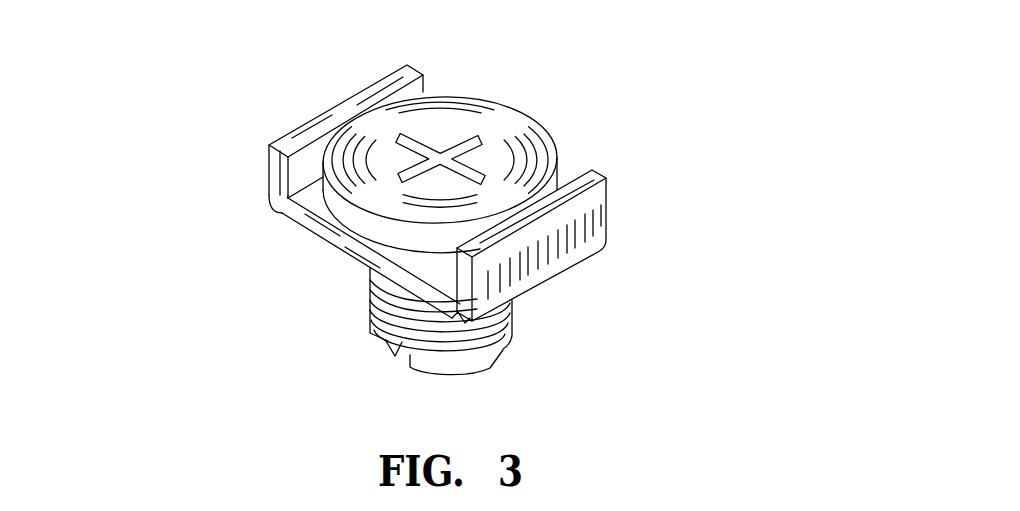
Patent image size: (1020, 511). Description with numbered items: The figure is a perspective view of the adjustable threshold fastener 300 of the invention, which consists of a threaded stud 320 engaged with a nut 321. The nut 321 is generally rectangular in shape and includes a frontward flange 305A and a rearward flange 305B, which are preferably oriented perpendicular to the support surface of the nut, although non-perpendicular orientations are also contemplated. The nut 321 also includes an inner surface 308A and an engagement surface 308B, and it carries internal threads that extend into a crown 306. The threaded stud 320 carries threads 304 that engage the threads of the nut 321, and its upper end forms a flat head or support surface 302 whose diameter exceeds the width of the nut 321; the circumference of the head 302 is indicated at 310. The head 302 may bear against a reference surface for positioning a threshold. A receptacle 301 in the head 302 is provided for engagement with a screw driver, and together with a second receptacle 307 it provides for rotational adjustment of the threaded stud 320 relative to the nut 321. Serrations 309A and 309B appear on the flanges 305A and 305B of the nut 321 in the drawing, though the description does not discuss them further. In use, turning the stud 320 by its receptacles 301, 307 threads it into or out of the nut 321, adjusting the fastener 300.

The adjustable threshold fastener 300 is at (693, 78).
The threaded stud 320 is at (613, 367).
The head or support surface 302 is at (498, 112).
The receptacle 301 is at (406, 130).
The nut 321 is at (418, 92).
The threads on the stud 304 is at (492, 318).
The crown 306 is at (403, 249).
The receptacle 307 is at (397, 358).
The frontward flange 305A is at (593, 208).
The rearward flange 305B is at (268, 152).
The serrations on right side bar 309A is at (524, 219).
The serrations on left side bar 309B is at (340, 113).
The inner surface 308A is at (280, 197).
The engagement surface 308B is at (347, 262).
The circumference of the head 310 is at (338, 228).